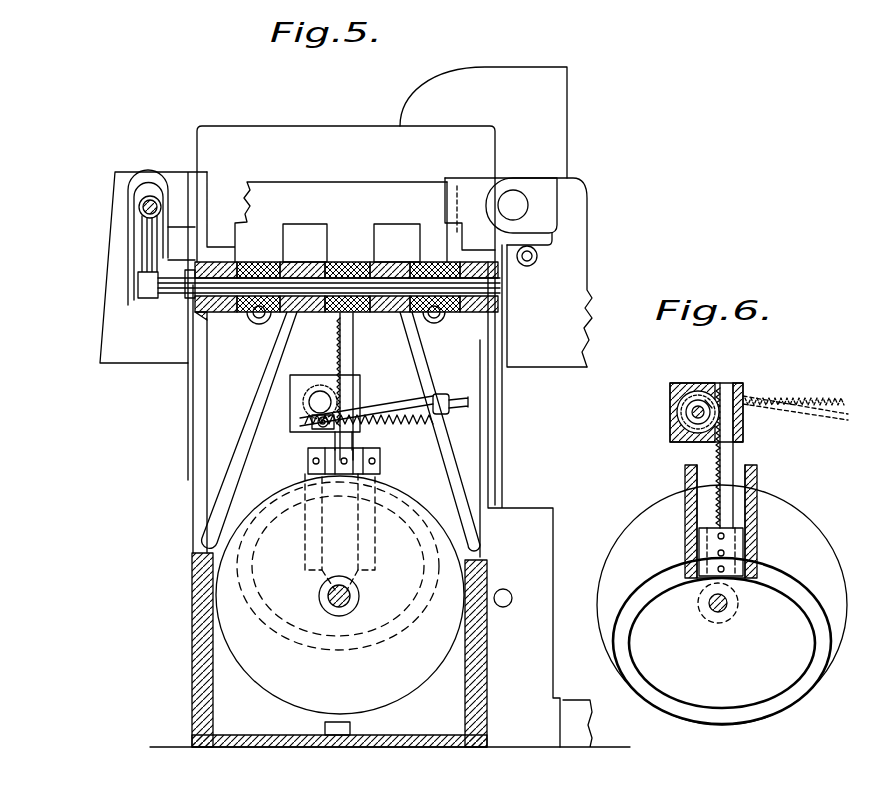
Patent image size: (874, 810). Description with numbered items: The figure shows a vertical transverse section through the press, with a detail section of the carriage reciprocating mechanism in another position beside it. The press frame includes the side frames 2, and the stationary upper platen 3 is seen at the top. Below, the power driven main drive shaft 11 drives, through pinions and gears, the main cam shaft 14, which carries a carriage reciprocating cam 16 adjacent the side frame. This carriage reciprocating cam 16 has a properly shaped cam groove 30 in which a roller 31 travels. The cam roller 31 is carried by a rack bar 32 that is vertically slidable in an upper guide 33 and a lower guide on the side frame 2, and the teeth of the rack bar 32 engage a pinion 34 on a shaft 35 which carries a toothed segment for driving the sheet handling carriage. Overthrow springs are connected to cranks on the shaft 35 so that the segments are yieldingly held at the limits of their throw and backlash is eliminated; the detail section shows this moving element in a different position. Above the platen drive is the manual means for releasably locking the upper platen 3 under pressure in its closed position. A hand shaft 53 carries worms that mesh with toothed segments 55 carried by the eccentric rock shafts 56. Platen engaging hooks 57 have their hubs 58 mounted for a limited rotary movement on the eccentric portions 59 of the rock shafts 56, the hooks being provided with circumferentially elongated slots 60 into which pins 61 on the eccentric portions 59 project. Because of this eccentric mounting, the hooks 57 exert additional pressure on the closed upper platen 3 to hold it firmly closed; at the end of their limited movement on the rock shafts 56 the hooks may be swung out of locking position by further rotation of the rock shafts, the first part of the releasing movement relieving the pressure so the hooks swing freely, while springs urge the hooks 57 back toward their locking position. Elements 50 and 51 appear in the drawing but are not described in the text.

In FIG. 5, the side frame 2 is at (442, 446).
In FIG. 5, the stationary upper platen 3 is at (346, 194).
In FIG. 5, the main drive shaft 11 is at (506, 592).
In FIG. 5, the main cam shaft 14 is at (350, 600).
In FIG. 6, the main cam shaft 14 is at (725, 610).
In FIG. 5, the carriage reciprocating cam 16 is at (340, 595).
In FIG. 6, the carriage reciprocating cam 16 is at (818, 542).
In FIG. 5, the cam groove 30 is at (308, 640).
In FIG. 6, the cam groove 30 is at (802, 665).
In FIG. 5, the roller 31 is at (380, 488).
In FIG. 6, the roller 31 is at (738, 556).
In FIG. 5, the rack bar 32 is at (352, 357).
In FIG. 6, the rack bar 32 is at (735, 500).
In FIG. 5, the upper guide 33 is at (355, 380).
In FIG. 6, the upper guide 33 is at (706, 385).
In FIG. 5, the pinion 34 is at (312, 426).
In FIG. 6, the pinion 34 is at (688, 418).
In FIG. 5, the shaft 35 is at (310, 404).
In FIG. 6, the shaft 35 is at (688, 408).
In FIG. 5, the bearing boss 50 is at (520, 197).
In FIG. 5, the bracket arm 51 is at (545, 190).
In FIG. 5, the hand shaft 53 is at (139, 210).
In FIG. 5, the toothed segment 55 is at (150, 262).
In FIG. 5, the eccentric rock shaft 56 is at (210, 294).
In FIG. 5, the platen engaging hook 57 is at (332, 217).
In FIG. 5, the hub 58 is at (350, 266).
In FIG. 5, the eccentric portion 59 is at (268, 268).
In FIG. 5, the circumferentially elongated slot 60 is at (311, 326).
In FIG. 5, the pin 61 is at (375, 326).